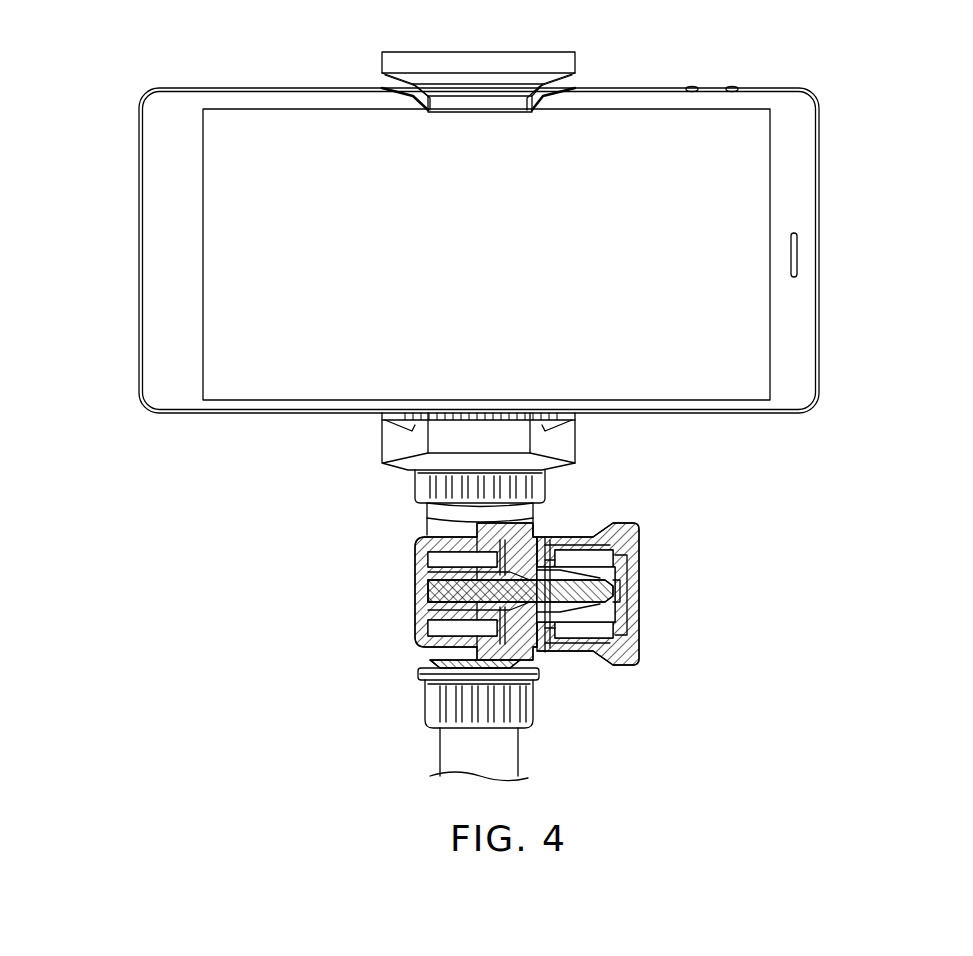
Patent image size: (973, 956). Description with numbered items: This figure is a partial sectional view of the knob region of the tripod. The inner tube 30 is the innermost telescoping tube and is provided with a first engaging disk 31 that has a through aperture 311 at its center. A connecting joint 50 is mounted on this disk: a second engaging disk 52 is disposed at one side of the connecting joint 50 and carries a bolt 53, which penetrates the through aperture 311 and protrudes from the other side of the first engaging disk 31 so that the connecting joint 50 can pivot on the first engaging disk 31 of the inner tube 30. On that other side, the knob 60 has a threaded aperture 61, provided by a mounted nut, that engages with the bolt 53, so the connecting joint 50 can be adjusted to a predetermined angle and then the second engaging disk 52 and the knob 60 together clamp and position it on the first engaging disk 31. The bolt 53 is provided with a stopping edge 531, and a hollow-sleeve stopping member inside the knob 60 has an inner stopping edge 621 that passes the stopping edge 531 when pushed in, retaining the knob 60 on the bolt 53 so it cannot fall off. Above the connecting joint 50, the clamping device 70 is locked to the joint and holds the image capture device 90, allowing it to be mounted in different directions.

The inner tube 30 is at (436, 752).
The first engaging disk 31 is at (419, 672).
The through aperture 311 is at (551, 533).
The connecting joint 50 is at (411, 538).
The second engaging disk 52 is at (415, 597).
The bolt 53 is at (644, 598).
The stopping edge 531 is at (630, 570).
The knob 60 is at (644, 658).
The threaded aperture 61 is at (597, 531).
The inner stopping edge 621 is at (583, 645).
The clamping device 70 is at (378, 66).
The image capture device 90 is at (832, 263).